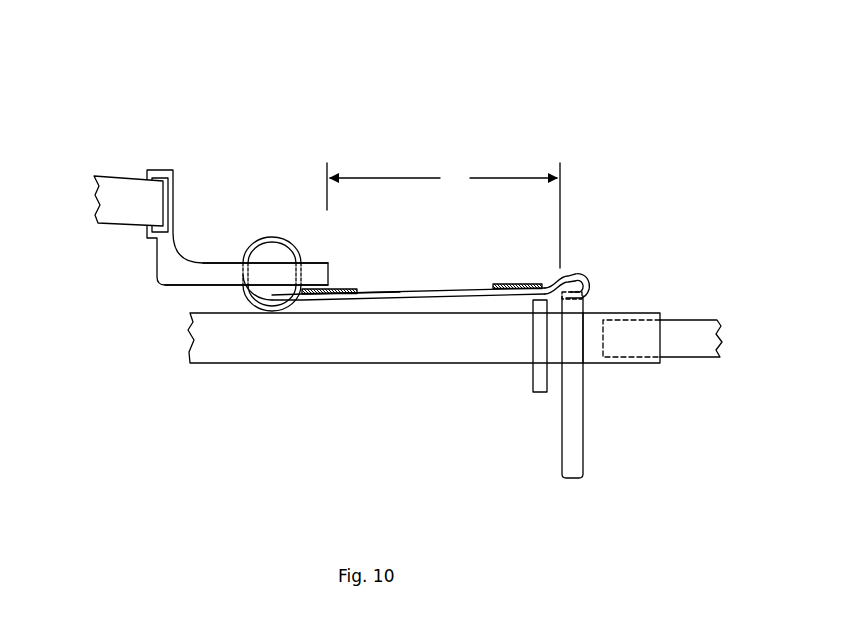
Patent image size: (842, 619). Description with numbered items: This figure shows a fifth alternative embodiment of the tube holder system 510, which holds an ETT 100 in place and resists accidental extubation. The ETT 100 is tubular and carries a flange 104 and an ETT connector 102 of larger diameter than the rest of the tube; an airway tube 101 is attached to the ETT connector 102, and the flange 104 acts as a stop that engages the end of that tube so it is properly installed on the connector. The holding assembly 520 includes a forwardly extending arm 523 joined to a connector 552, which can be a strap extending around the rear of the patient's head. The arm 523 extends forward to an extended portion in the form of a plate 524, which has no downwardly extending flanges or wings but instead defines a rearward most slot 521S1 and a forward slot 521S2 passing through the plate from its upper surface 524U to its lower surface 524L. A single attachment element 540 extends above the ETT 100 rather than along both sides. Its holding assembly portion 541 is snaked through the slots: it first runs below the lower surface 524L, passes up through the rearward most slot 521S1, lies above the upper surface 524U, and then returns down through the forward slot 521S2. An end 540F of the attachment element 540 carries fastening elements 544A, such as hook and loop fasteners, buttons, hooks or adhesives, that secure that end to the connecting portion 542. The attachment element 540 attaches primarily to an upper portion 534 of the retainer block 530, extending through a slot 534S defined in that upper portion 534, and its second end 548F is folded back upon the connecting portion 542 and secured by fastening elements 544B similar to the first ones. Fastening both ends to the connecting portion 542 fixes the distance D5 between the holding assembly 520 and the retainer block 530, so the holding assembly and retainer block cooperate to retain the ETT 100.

The ETT 100 is at (265, 353).
The airway tube 101 is at (690, 333).
The ETT connector 102 is at (603, 366).
The flange 104 is at (542, 393).
The tube holder system 510 is at (461, 121).
The holding assembly 520 is at (193, 246).
The rearward most slot 521S1 is at (266, 250).
The forward slot 521S2 is at (298, 275).
The arm 523 is at (175, 263).
The plate 524 is at (223, 273).
The upper surface 524U is at (203, 263).
The lower surface 524L is at (186, 288).
The retainer block 530 is at (575, 468).
The upper portion 534 is at (598, 300).
The slot 534S is at (573, 288).
The attachment element 540 is at (410, 280).
The end 540F is at (369, 294).
The holding assembly portion 541 is at (257, 293).
The connecting portion 542 is at (410, 297).
The fastening elements 544A is at (355, 288).
The fastening elements 544B is at (507, 285).
The second end 548F is at (547, 280).
The connector 552 is at (128, 190).
The distance D5 is at (443, 215).